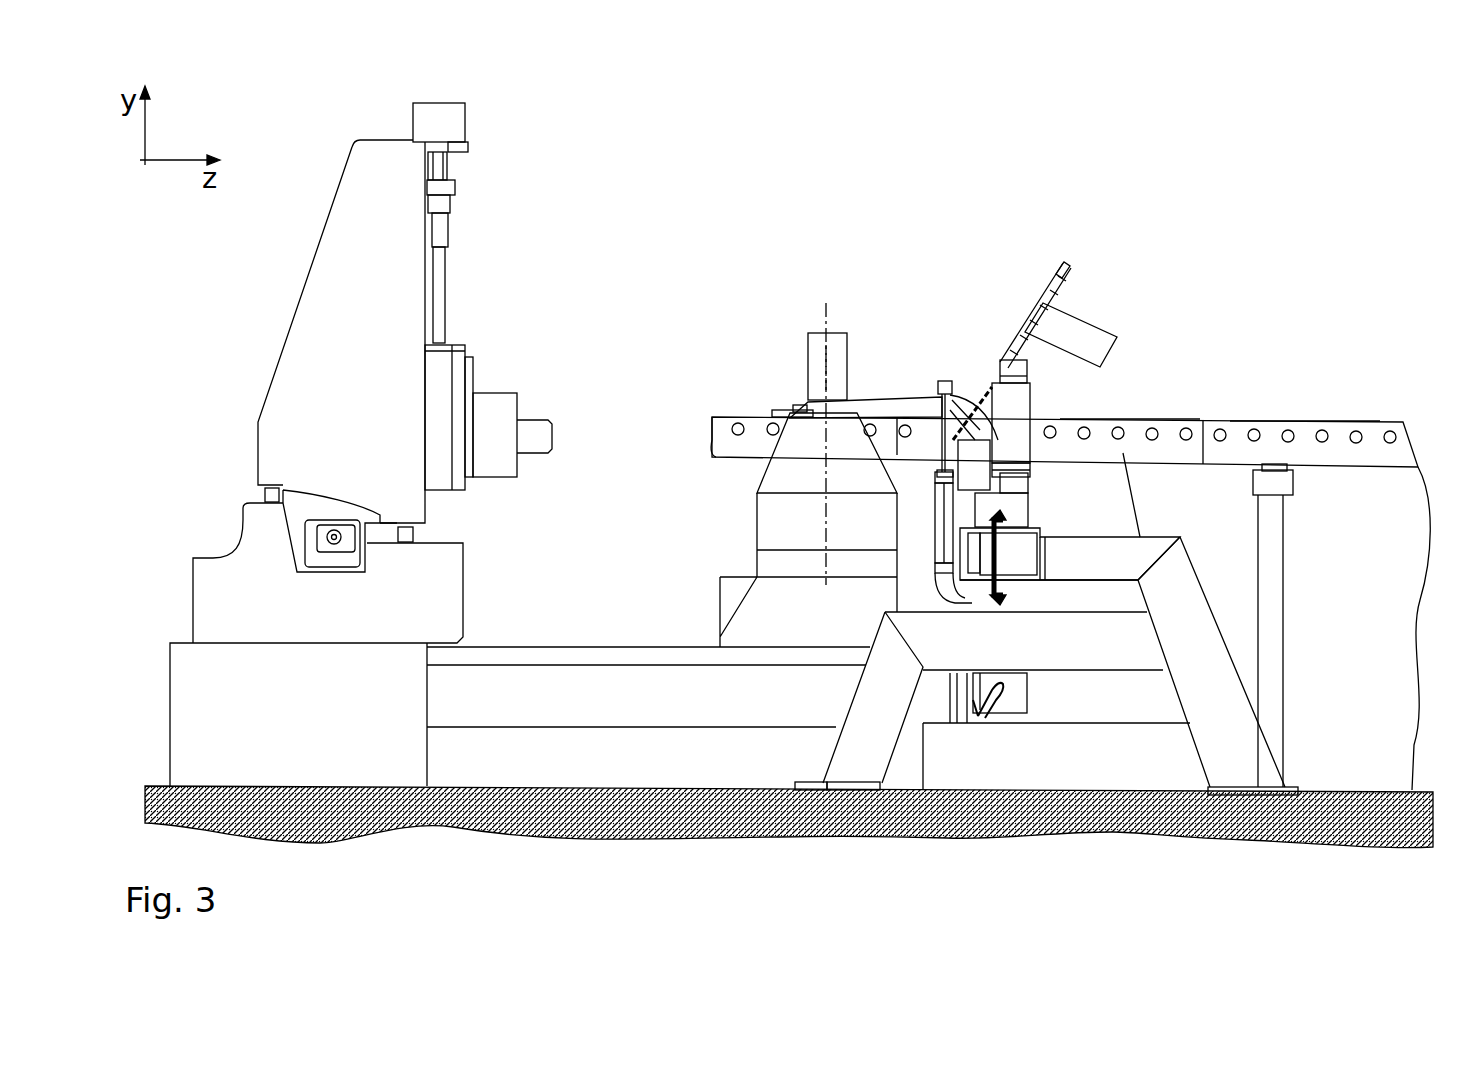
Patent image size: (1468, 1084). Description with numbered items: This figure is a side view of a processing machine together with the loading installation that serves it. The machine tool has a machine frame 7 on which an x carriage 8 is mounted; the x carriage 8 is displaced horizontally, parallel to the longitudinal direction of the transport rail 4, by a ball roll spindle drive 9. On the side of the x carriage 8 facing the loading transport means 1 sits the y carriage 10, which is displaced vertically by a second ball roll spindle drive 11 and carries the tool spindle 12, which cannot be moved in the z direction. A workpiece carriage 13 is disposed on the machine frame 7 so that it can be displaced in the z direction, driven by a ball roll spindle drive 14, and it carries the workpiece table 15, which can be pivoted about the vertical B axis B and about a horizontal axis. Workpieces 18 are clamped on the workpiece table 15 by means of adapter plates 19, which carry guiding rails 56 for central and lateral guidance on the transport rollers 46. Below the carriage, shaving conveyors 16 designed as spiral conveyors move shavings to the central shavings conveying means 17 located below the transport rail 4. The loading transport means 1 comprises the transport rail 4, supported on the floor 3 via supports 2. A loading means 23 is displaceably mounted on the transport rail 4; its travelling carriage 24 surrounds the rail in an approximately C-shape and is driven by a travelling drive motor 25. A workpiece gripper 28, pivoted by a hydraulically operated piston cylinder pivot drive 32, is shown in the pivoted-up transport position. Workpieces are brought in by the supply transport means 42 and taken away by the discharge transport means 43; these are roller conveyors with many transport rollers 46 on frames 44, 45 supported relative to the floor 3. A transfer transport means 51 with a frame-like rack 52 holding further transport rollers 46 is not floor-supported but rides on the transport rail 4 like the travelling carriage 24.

The loading transport means 1 is at (1147, 532).
The supports 2 is at (1240, 780).
The floor 3 is at (1310, 838).
The transport rail 4 is at (1033, 585).
The machine frame 7 is at (186, 703).
The x carriage 8 is at (297, 362).
The ball roll spindle drive 9 is at (334, 540).
The y carriage 10 is at (447, 345).
The ball roll spindle drive 11 is at (445, 278).
The tool spindle 12 is at (532, 424).
The workpiece carriage 13 is at (760, 523).
The ball roll spindle drive 14 is at (1020, 702).
The workpiece table 15 is at (800, 427).
The shaving conveyors 16 is at (982, 718).
The central shavings conveying means 17 is at (1097, 778).
The workpieces 18 is at (845, 353).
The adapter plates 19 is at (774, 410).
The loading means 23 is at (980, 373).
The travelling carriage 24 is at (885, 783).
The travelling drive motor 25 is at (1023, 393).
The workpiece gripper 28 is at (867, 396).
The piston cylinder pivot drive 32 is at (926, 545).
The supply transport means 42 is at (740, 412).
The discharge transport means 43 is at (1316, 422).
The frame 44 is at (713, 431).
The frame 45 is at (1378, 447).
The transport rollers 46 is at (1254, 432).
The transfer transport means 51 is at (1150, 419).
The frame-like rack 52 is at (1140, 585).
The guiding rails 56 is at (797, 406).
The B axis B is at (826, 305).